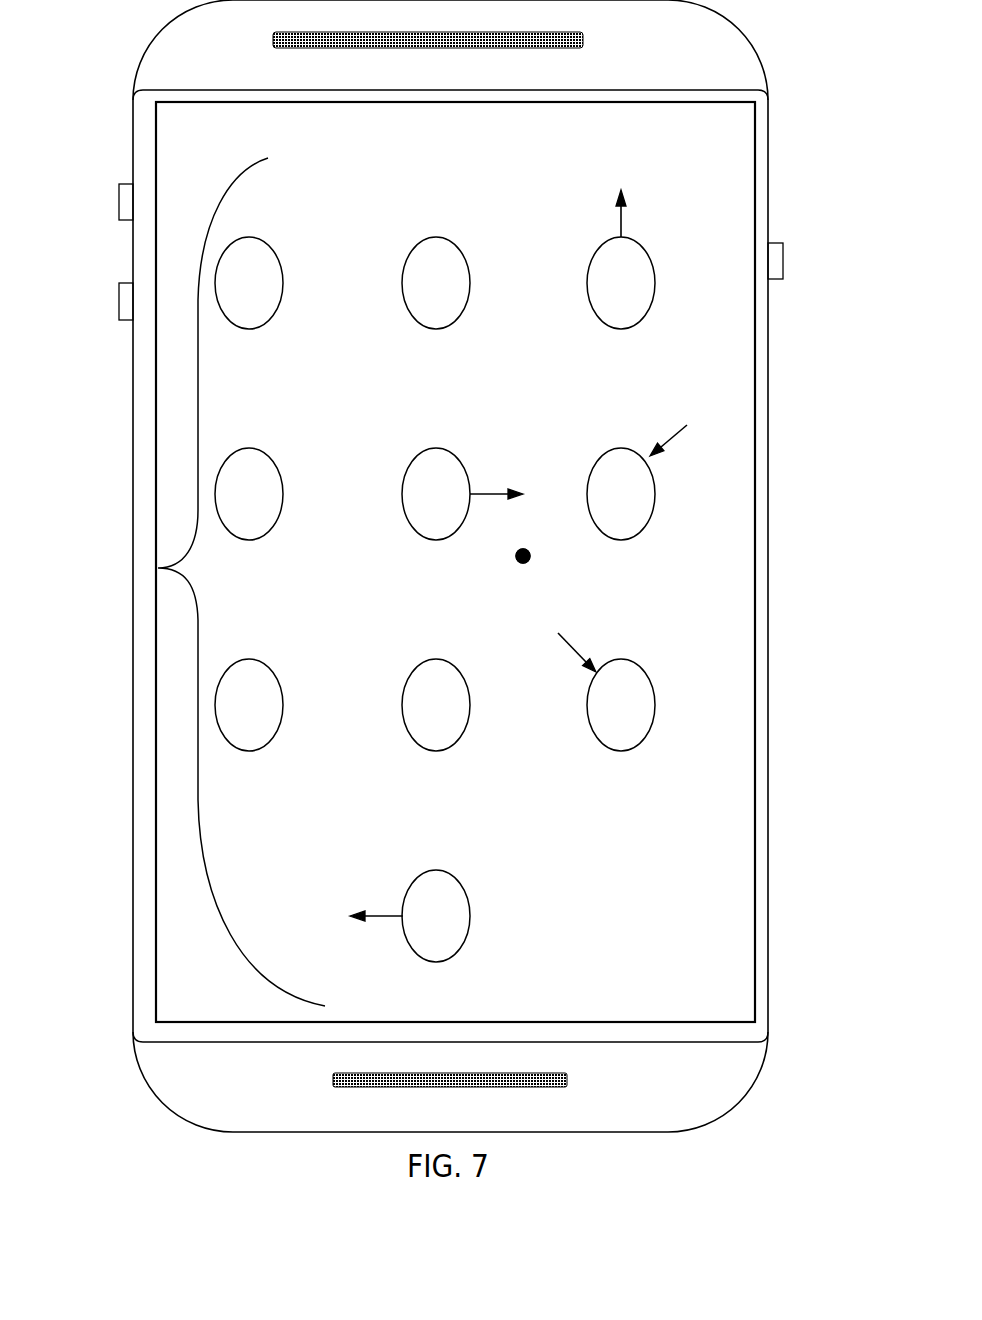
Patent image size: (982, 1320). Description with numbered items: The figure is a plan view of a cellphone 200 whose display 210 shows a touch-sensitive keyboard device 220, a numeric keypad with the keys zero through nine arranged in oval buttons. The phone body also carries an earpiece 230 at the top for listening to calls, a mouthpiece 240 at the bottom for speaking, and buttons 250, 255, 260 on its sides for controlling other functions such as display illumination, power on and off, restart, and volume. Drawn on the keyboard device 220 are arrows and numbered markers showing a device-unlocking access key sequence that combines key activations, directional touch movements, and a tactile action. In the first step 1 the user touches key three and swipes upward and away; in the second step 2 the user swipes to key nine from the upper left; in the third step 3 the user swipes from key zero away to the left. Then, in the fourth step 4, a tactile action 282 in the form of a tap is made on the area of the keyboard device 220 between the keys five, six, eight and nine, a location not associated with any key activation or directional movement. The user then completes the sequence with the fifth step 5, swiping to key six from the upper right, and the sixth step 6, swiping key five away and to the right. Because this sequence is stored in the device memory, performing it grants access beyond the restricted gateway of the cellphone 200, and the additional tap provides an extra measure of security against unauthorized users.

The cellphone 200 is at (146, 42).
The display 210 is at (708, 183).
The keyboard device 220 is at (158, 568).
The earpiece 230 is at (583, 38).
The mouthpiece 240 is at (567, 1080).
The button 250 is at (119, 200).
The button 255 is at (119, 300).
The button 260 is at (783, 258).
The tactile action 282 is at (523, 556).
The first sequence step 1 is at (660, 235).
The second sequence step 2 is at (650, 645).
The third sequence step 3 is at (478, 870).
The fourth sequence step 4 is at (516, 557).
The fifth sequence step 5 is at (683, 460).
The sixth sequence step 6 is at (485, 450).